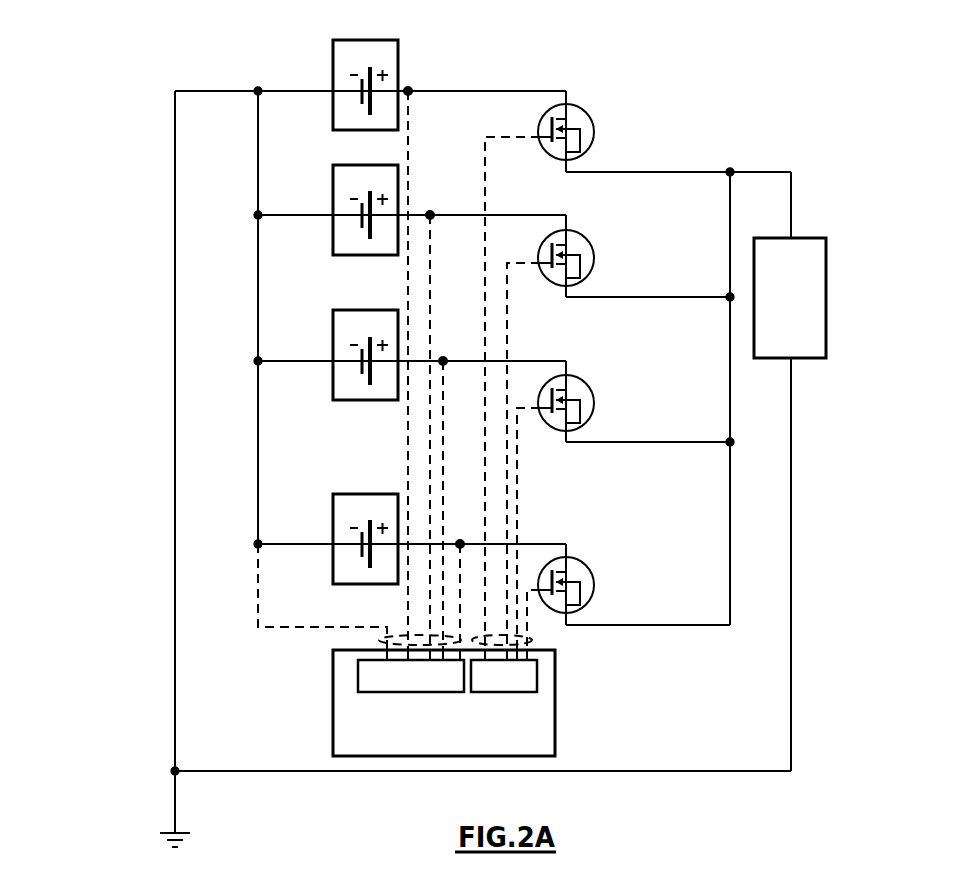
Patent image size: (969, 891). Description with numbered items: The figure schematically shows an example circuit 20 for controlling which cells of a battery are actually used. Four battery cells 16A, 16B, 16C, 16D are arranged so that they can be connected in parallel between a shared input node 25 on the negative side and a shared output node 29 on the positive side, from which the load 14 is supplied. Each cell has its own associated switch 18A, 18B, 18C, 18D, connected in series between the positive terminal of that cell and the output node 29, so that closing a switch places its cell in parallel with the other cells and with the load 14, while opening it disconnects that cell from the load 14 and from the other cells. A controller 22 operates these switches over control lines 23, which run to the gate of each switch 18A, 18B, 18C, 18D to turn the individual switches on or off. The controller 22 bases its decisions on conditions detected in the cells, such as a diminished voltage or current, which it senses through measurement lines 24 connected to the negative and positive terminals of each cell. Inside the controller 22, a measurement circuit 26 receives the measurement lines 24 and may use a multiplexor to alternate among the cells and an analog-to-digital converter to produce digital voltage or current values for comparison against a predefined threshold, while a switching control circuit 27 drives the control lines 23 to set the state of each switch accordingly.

The circuit 20 is at (112, 133).
The shared input node 25 is at (256, 78).
The shared output node 29 is at (733, 160).
The load 14 is at (826, 293).
The battery cell 16A is at (333, 60).
The battery cell 16B is at (333, 185).
The battery cell 16C is at (333, 330).
The battery cell 16D is at (333, 513).
The switch 18A is at (585, 112).
The switch 18B is at (585, 237).
The switch 18C is at (585, 382).
The switch 18D is at (585, 567).
The controller 22 is at (333, 703).
The control lines 23 is at (533, 638).
The measurement lines 24 is at (396, 633).
The measurement circuit 26 is at (401, 696).
The switching control circuit 27 is at (501, 696).